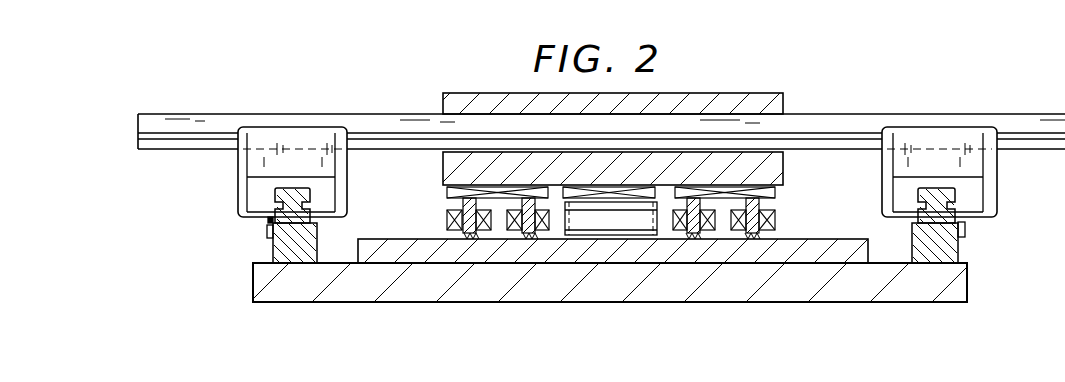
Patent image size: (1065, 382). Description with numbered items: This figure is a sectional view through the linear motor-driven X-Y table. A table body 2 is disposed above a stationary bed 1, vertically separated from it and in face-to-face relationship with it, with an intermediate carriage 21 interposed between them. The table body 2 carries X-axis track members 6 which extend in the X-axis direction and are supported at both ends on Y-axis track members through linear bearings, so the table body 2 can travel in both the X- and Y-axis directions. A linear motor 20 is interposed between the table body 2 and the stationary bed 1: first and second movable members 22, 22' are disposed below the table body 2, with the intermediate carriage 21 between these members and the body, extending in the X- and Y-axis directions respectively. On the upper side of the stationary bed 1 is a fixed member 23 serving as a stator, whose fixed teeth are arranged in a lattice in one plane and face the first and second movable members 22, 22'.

The stationary bed 1 is at (883, 292).
The table body 2 is at (779, 112).
The X-axis track member 6 is at (698, 122).
The linear motor 20 is at (613, 283).
The intermediate carriage 21 is at (773, 167).
The first movable member 22 is at (603, 274).
The second movable member 22' is at (611, 276).
The fixed member 23 is at (545, 248).